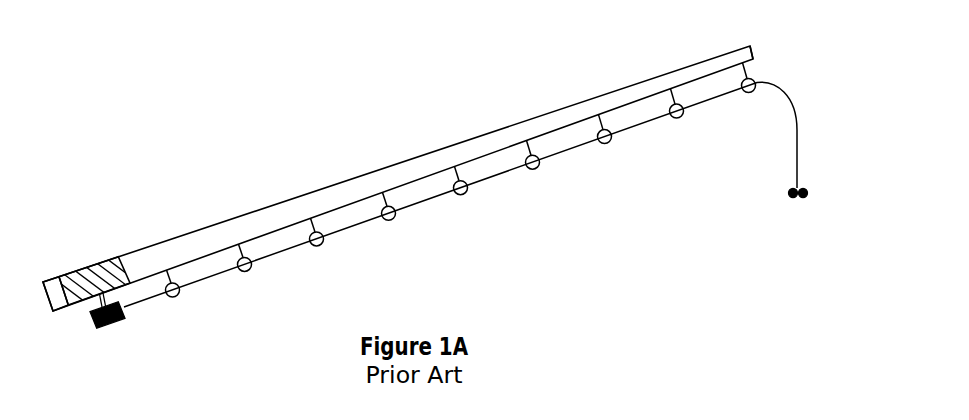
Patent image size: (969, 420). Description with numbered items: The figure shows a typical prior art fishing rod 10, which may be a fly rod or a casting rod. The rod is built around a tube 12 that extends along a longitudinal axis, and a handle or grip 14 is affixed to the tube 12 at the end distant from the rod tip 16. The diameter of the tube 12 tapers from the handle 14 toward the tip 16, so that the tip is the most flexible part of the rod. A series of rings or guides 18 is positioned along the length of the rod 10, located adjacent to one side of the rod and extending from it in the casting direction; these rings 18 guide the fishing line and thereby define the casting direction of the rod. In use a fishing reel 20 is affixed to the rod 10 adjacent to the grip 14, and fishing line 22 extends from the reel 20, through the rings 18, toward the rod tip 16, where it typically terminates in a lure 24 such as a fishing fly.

The fishing rod 10 is at (564, 268).
The tube 12 is at (349, 178).
The handle or grip 14 is at (90, 266).
The rod tip 16 is at (742, 55).
The rings or guides 18 is at (179, 298).
The fishing reel 20 is at (118, 318).
The fishing line 22 is at (283, 251).
The lure 24 is at (798, 198).